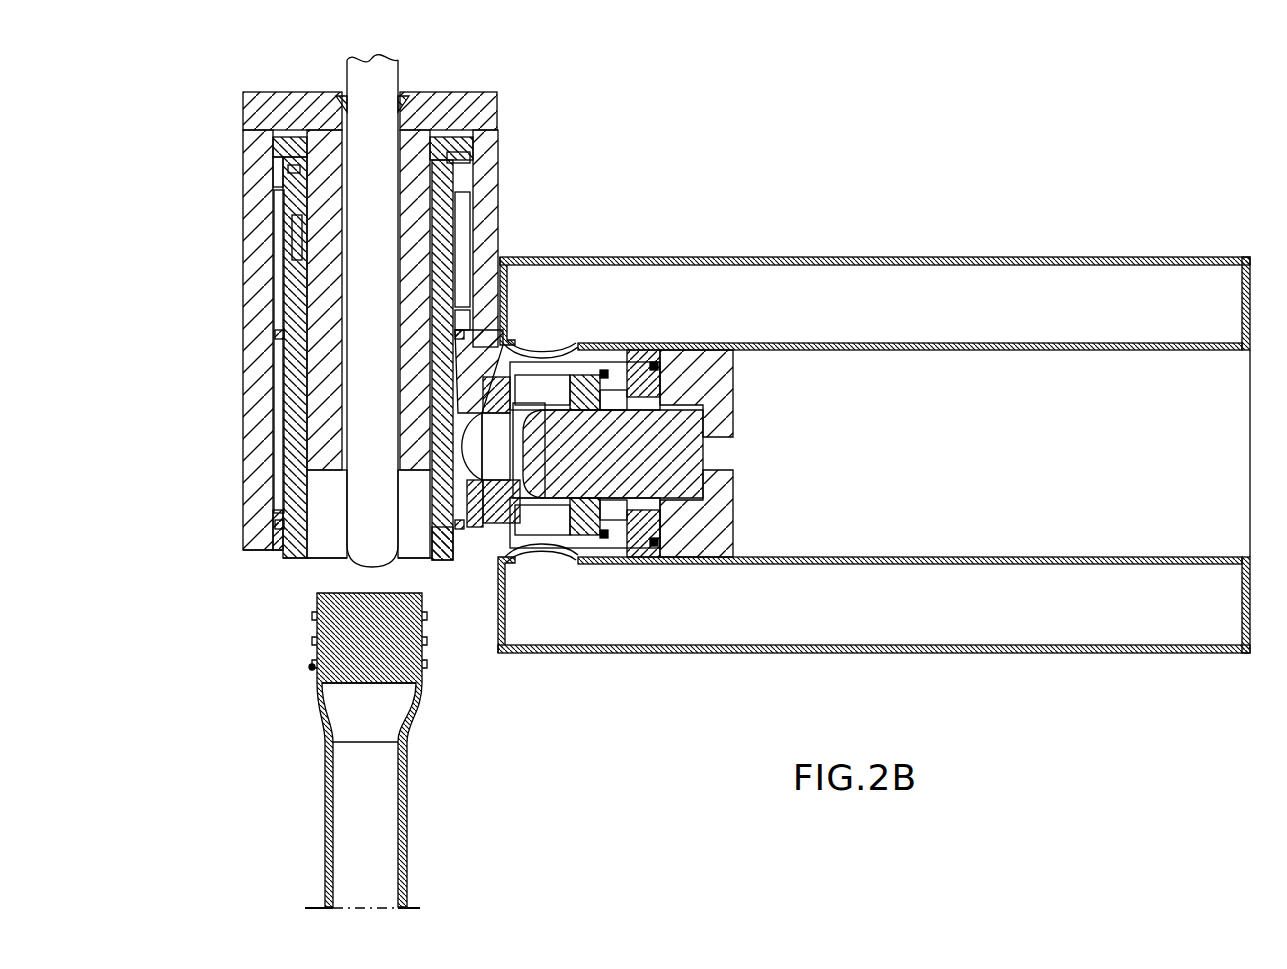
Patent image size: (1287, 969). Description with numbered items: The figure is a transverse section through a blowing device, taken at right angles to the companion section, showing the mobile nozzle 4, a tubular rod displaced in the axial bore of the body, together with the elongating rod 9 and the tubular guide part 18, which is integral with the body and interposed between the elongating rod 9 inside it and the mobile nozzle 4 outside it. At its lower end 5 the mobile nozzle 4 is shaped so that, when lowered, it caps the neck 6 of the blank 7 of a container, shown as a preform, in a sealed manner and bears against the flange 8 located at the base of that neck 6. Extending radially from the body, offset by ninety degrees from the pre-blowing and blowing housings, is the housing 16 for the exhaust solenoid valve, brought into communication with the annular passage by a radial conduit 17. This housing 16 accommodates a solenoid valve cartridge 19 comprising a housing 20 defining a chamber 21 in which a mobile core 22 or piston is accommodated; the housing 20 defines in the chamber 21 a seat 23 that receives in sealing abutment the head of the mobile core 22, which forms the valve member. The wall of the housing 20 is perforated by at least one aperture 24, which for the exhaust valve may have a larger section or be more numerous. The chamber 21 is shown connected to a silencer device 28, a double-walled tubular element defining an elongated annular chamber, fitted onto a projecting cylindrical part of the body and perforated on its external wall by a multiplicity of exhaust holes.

The mobile nozzle 4 is at (289, 548).
The lower end 5 is at (442, 530).
The neck 6 is at (312, 628).
The blank 7 is at (418, 832).
The flange 8 is at (310, 669).
The elongating rod 9 is at (366, 102).
The housing 16 is at (492, 527).
The radial conduit 17 is at (472, 470).
The tubular guide part 18 is at (330, 275).
The solenoid valve cartridge 19 is at (590, 347).
The housing 20 is at (655, 347).
The chamber 21 is at (612, 505).
The mobile core 22 is at (680, 455).
The seat 23 is at (505, 333).
The aperture 24 is at (558, 530).
The silencer device 28 is at (869, 254).